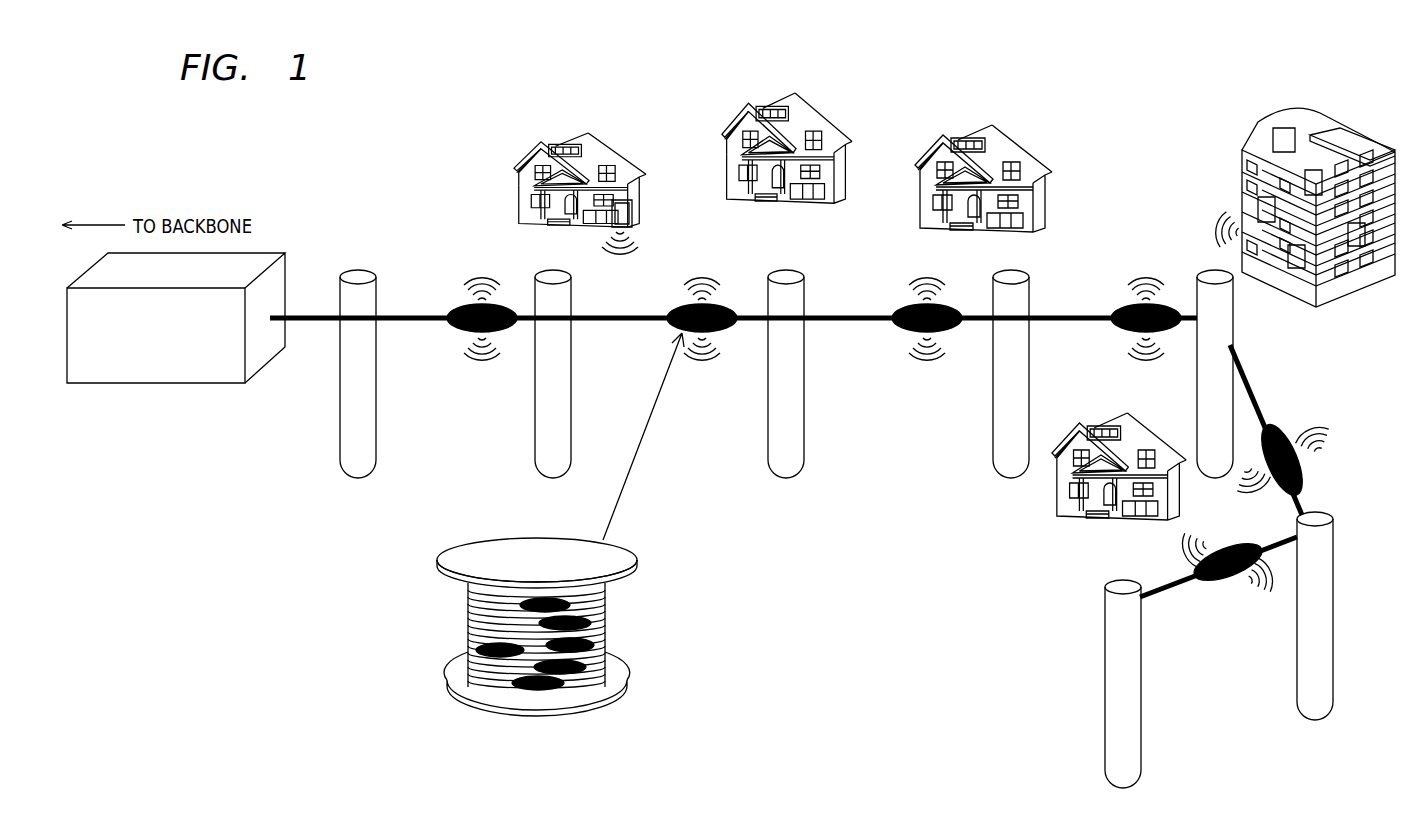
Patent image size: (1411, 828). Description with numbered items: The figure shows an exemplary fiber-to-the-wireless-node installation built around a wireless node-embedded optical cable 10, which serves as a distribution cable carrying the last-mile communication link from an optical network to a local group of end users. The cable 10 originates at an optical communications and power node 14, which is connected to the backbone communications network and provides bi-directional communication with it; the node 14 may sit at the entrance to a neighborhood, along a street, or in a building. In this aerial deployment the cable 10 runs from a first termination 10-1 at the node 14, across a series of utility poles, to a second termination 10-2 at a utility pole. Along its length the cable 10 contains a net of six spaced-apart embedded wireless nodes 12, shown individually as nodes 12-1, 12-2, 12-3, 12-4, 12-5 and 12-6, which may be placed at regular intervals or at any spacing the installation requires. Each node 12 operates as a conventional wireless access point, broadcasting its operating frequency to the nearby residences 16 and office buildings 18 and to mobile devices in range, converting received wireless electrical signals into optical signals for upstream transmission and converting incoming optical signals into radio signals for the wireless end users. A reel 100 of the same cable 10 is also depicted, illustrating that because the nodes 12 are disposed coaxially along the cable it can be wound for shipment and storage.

The wireless node-embedded optical cable 10 is at (420, 315).
The first termination 10-1 is at (272, 320).
The second termination 10-2 is at (1140, 598).
The embedded wireless node 12 is at (593, 625).
The embedded wireless node 12-1 is at (462, 328).
The embedded wireless node 12-2 is at (672, 328).
The embedded wireless node 12-3 is at (902, 328).
The embedded wireless node 12-4 is at (1120, 328).
The embedded wireless node 12-5 is at (1280, 435).
The embedded wireless node 12-6 is at (1200, 563).
The optical communications and power (OCP) node 14 is at (152, 383).
The residences 16 is at (731, 122).
The office buildings 18 is at (1262, 133).
The reel 100 is at (565, 524).